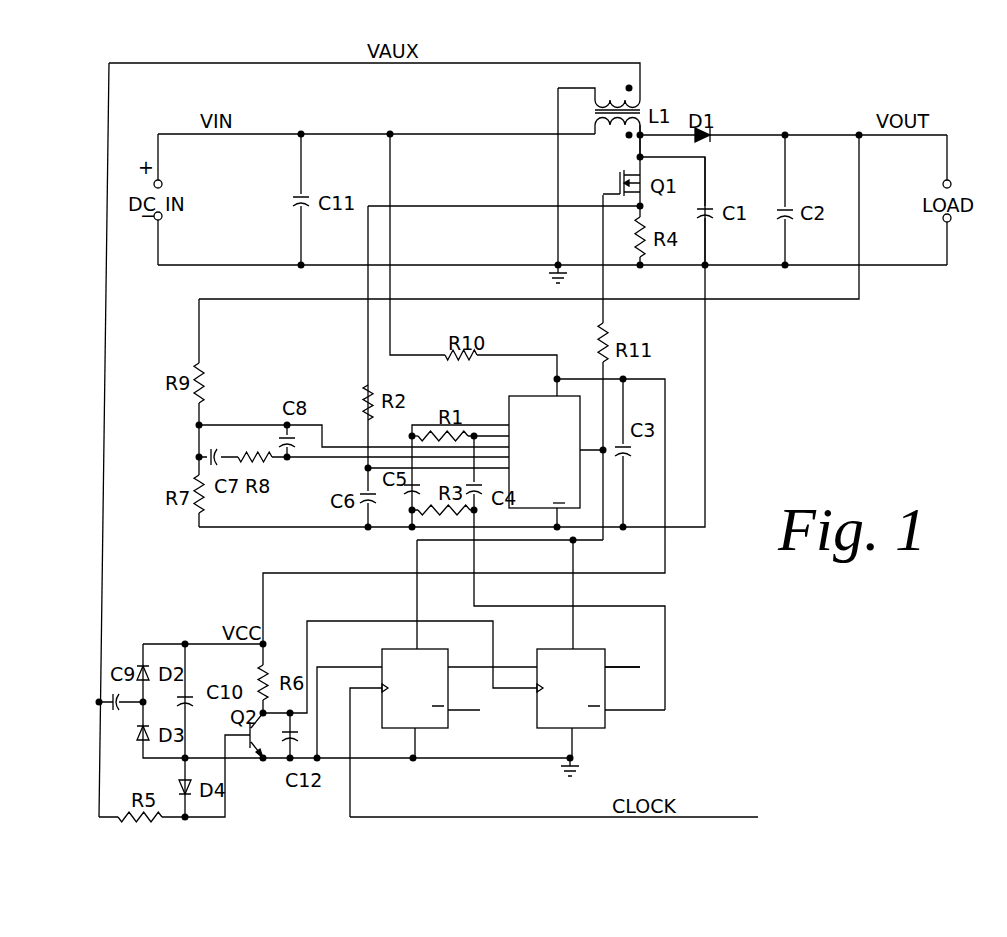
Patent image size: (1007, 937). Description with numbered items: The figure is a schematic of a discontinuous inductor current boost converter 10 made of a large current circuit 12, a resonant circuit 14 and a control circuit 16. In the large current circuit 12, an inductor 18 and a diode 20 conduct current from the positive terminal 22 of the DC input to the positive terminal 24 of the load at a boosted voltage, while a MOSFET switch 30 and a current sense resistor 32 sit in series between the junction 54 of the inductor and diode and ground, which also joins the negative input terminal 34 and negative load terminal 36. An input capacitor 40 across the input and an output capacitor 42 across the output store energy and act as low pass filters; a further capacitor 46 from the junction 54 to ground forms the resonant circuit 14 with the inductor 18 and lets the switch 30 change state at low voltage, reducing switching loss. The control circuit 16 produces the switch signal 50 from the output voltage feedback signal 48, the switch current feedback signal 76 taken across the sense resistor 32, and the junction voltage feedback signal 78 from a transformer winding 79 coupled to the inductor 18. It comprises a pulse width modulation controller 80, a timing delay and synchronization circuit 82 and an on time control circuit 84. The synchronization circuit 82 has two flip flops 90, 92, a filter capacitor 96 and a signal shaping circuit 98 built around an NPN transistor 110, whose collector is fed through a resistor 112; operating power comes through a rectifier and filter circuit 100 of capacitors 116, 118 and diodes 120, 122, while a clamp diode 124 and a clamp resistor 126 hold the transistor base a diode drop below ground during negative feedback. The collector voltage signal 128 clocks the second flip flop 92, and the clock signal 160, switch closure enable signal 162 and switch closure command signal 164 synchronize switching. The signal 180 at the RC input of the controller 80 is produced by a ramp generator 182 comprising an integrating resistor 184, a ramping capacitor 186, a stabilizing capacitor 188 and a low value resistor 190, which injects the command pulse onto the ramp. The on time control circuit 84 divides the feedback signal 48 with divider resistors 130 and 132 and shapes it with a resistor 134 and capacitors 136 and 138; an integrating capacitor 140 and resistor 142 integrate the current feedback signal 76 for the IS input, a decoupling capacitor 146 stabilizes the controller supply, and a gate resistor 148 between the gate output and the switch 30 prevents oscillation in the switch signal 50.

The discontinuous inductor current boost converter 10 is at (926, 81).
The large current circuit 12 is at (752, 92).
The resonant circuit 14 is at (500, 112).
The control circuit 16 is at (716, 412).
The inductor L1 18 is at (612, 124).
The diode D1 20 is at (712, 133).
The positive terminal of the DC input 22 is at (163, 181).
The positive terminal of the DC output 24 is at (951, 182).
The switch Q1 30 is at (617, 180).
The current sense resistor R4 32 is at (632, 258).
The negative input terminal 34 is at (163, 218).
The negative output terminal 36 is at (950, 227).
The capacitor C11 40 is at (294, 198).
The capacitor C2 42 is at (781, 210).
The capacitor C1 46 is at (707, 209).
The output voltage feedback signal 48 is at (805, 302).
The switch signal 50 is at (600, 328).
The junction 54 is at (645, 134).
The switch current feedback signal 76 is at (470, 206).
The junction voltage feedback signal 78 is at (106, 310).
The transformer winding 79 is at (608, 100).
The pulse width modulation controller 80 is at (525, 396).
The timing delay and synchronization circuit 82 is at (690, 637).
The on time control circuit 84 is at (291, 359).
The flip flop 90 is at (392, 649).
The flip flop 92 is at (596, 649).
The filter capacitor 96 is at (297, 741).
The signal shaping circuit 98 is at (318, 824).
The rectifier and filter circuit 100 is at (151, 598).
The NPN transistor Q2 110 is at (253, 747).
The resistor R6 112 is at (268, 681).
The capacitor C10 116 is at (186, 695).
The capacitor C9 118 is at (122, 712).
The diode D2 120 is at (141, 668).
The diode D3 122 is at (141, 741).
The diode D4 124 is at (192, 800).
The resistor R5 126 is at (135, 823).
The collector voltage signal 128 is at (376, 621).
The resistor R9 130 is at (205, 381).
The resistor R7 132 is at (205, 503).
The resistor R8 134 is at (272, 462).
The capacitor C8 136 is at (280, 441).
The capacitor C7 138 is at (206, 456).
The capacitor C6 140 is at (366, 521).
The resistor R2 142 is at (362, 400).
The capacitor C3 146 is at (632, 457).
The resistor R11 148 is at (609, 337).
The clock signal 160 is at (436, 816).
The switch closure enable signal 162 is at (478, 664).
The switch closure command signal 164 is at (667, 694).
The signal at the RC input 180 is at (488, 420).
The ramp generator 182 is at (499, 377).
The resistor R1 184 is at (431, 433).
The ramping capacitor C4 186 is at (469, 506).
The stabilizing capacitor C5 188 is at (408, 494).
The resistor R3 190 is at (453, 517).